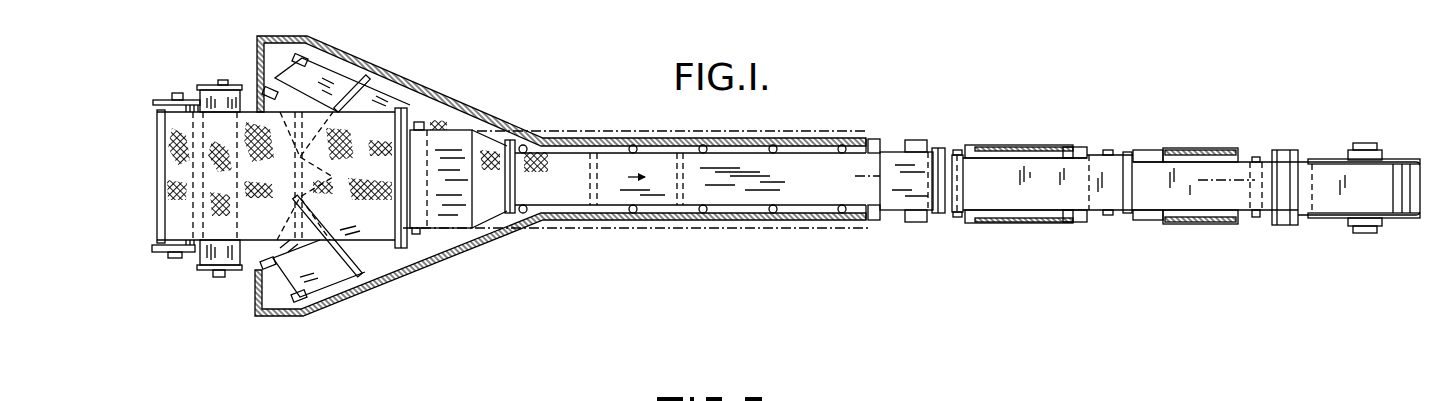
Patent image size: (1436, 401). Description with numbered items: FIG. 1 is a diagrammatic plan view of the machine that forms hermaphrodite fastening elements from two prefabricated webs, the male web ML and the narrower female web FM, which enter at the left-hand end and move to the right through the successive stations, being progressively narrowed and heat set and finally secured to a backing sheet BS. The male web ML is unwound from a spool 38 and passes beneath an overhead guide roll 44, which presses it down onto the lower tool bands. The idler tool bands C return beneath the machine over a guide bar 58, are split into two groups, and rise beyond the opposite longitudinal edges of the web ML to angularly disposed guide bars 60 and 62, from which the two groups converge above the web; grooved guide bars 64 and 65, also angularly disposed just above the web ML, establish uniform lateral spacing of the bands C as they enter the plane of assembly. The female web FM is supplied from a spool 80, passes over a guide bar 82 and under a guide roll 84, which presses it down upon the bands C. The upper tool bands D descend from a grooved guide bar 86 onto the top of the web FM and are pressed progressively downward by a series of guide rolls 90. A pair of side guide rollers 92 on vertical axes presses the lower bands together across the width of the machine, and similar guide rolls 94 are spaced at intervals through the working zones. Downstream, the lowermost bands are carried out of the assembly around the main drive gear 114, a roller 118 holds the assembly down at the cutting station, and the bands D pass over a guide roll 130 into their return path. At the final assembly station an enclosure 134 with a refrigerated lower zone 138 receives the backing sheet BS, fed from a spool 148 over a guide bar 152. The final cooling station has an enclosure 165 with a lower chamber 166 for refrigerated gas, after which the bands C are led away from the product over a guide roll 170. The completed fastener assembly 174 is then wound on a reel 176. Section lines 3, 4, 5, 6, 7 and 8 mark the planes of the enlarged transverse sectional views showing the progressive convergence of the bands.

The spool 38 is at (208, 272).
The overhead guide roll 44 is at (297, 176).
The guide bar 58 is at (590, 208).
The guide bar 60 is at (300, 300).
The guide bar 62 is at (302, 57).
The guide bar 64 is at (365, 280).
The guide bar 65 is at (362, 79).
The spool 80 is at (166, 255).
The guide roll or bar 82 is at (163, 243).
The guide roll 84 is at (395, 175).
The guide roll or bar 86 is at (418, 122).
The guide rolls 90 is at (506, 185).
The side guide rollers 92 is at (526, 146).
The guide rolls 94 is at (634, 146).
The main drive gear 114 is at (886, 217).
The roller 118 is at (913, 143).
The guide roll 130 is at (945, 150).
The enclosure 134 is at (1083, 217).
The lower zone 138 is at (1023, 150).
The spool 148 is at (1125, 157).
The roll or bar 152 is at (957, 215).
The enclosure 165 is at (1222, 222).
The lower chamber 166 is at (1192, 157).
The guide roll 170 is at (1256, 218).
The completed fastener assembly 174 is at (1318, 160).
The reel 176 is at (1340, 218).
The male web ML is at (213, 96).
The female web FM is at (165, 170).
The backing sheet BS is at (1018, 198).
The tool bands C is at (308, 80).
The tool bands D is at (663, 229).
The section line 3 is at (360, 105).
The section line 4 is at (438, 57).
The section line 5 is at (515, 80).
The section line 6 is at (917, 108).
The section line 7 is at (991, 197).
The section line 8 is at (837, 175).